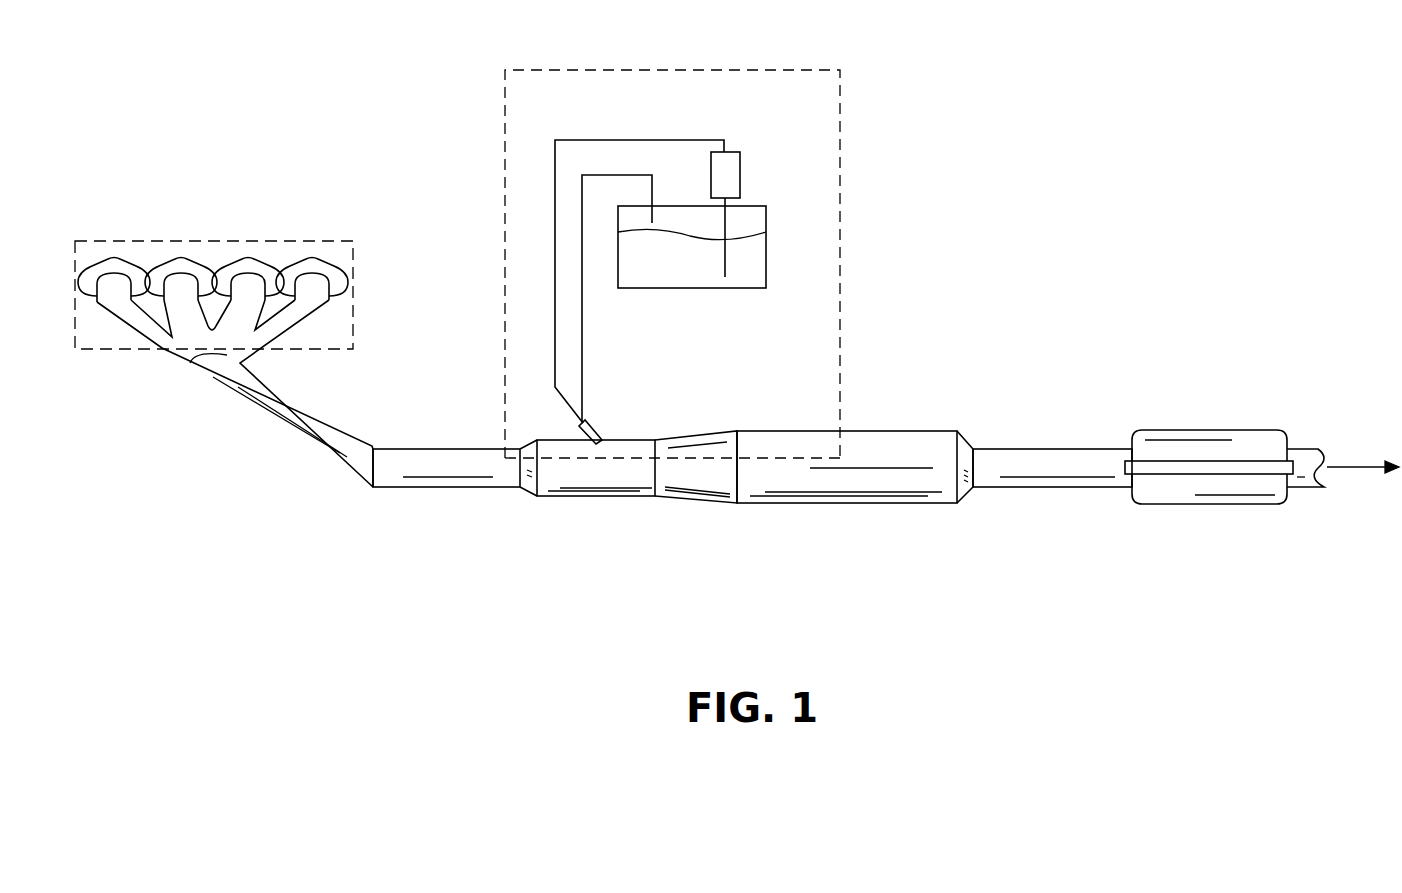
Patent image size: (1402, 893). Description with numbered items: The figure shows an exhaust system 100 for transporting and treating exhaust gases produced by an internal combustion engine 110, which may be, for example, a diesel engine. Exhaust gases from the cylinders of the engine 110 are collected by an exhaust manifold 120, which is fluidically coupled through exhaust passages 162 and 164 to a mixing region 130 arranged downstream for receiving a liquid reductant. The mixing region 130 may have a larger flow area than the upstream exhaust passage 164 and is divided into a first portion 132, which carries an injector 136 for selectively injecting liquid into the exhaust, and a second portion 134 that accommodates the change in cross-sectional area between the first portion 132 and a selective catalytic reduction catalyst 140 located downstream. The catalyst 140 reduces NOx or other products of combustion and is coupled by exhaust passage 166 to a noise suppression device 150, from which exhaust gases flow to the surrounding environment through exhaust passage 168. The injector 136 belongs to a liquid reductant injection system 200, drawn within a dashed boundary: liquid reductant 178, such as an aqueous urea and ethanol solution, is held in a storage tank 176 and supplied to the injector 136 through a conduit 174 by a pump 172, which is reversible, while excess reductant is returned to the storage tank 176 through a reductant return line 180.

The exhaust system 100 is at (204, 454).
The internal combustion engine 110 is at (357, 263).
The exhaust manifold 120 is at (173, 348).
The mixing region 130 is at (637, 488).
The first portion 132 is at (560, 498).
The second portion 134 is at (702, 502).
The injector 136 is at (593, 424).
The selective catalytic reduction catalyst 140 is at (863, 430).
The noise suppression device 150 is at (1210, 430).
The exhaust passage 162 is at (292, 437).
The exhaust passage 164 is at (393, 447).
The exhaust passage 166 is at (1038, 448).
The exhaust passage 168 is at (1298, 448).
The pump 172 is at (743, 192).
The conduit 174 is at (595, 140).
The storage tank 176 is at (767, 268).
The liquid reductant 178 is at (668, 255).
The reductant return line 180 is at (583, 367).
The liquid reductant injection system 200 is at (843, 172).